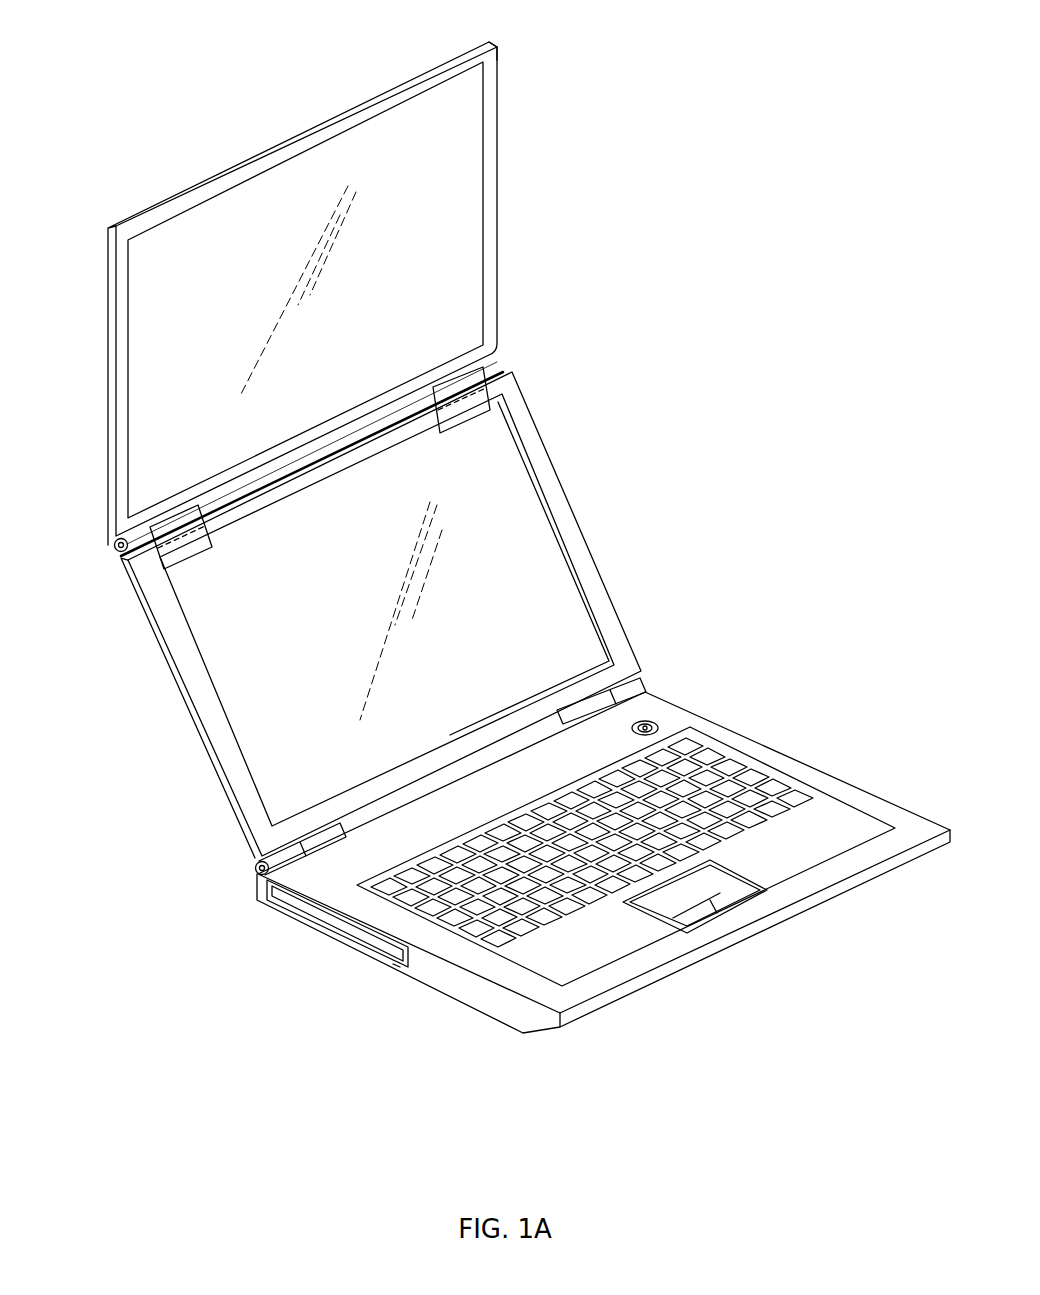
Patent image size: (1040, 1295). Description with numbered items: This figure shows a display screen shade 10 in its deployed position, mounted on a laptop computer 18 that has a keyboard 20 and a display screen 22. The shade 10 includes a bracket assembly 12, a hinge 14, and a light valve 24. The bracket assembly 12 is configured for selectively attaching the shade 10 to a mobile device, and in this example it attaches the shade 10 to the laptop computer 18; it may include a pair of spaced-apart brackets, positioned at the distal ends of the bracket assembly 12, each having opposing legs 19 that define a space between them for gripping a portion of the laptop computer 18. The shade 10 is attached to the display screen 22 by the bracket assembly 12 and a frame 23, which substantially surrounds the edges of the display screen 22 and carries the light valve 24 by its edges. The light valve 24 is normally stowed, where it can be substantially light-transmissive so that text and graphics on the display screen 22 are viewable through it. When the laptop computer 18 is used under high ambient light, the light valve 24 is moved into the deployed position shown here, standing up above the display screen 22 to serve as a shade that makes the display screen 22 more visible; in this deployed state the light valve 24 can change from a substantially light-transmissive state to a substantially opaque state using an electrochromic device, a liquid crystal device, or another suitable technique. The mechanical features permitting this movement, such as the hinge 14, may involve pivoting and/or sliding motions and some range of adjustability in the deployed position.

The display screen shade 10 is at (108, 262).
The bracket assembly 12 is at (505, 347).
The hinge 14 is at (114, 541).
The laptop computer 18 is at (165, 664).
The opposing legs 19 is at (158, 562).
The keyboard 20 is at (705, 725).
The display screen 22 is at (248, 714).
The frame 23 is at (497, 46).
The light valve 24 is at (486, 162).